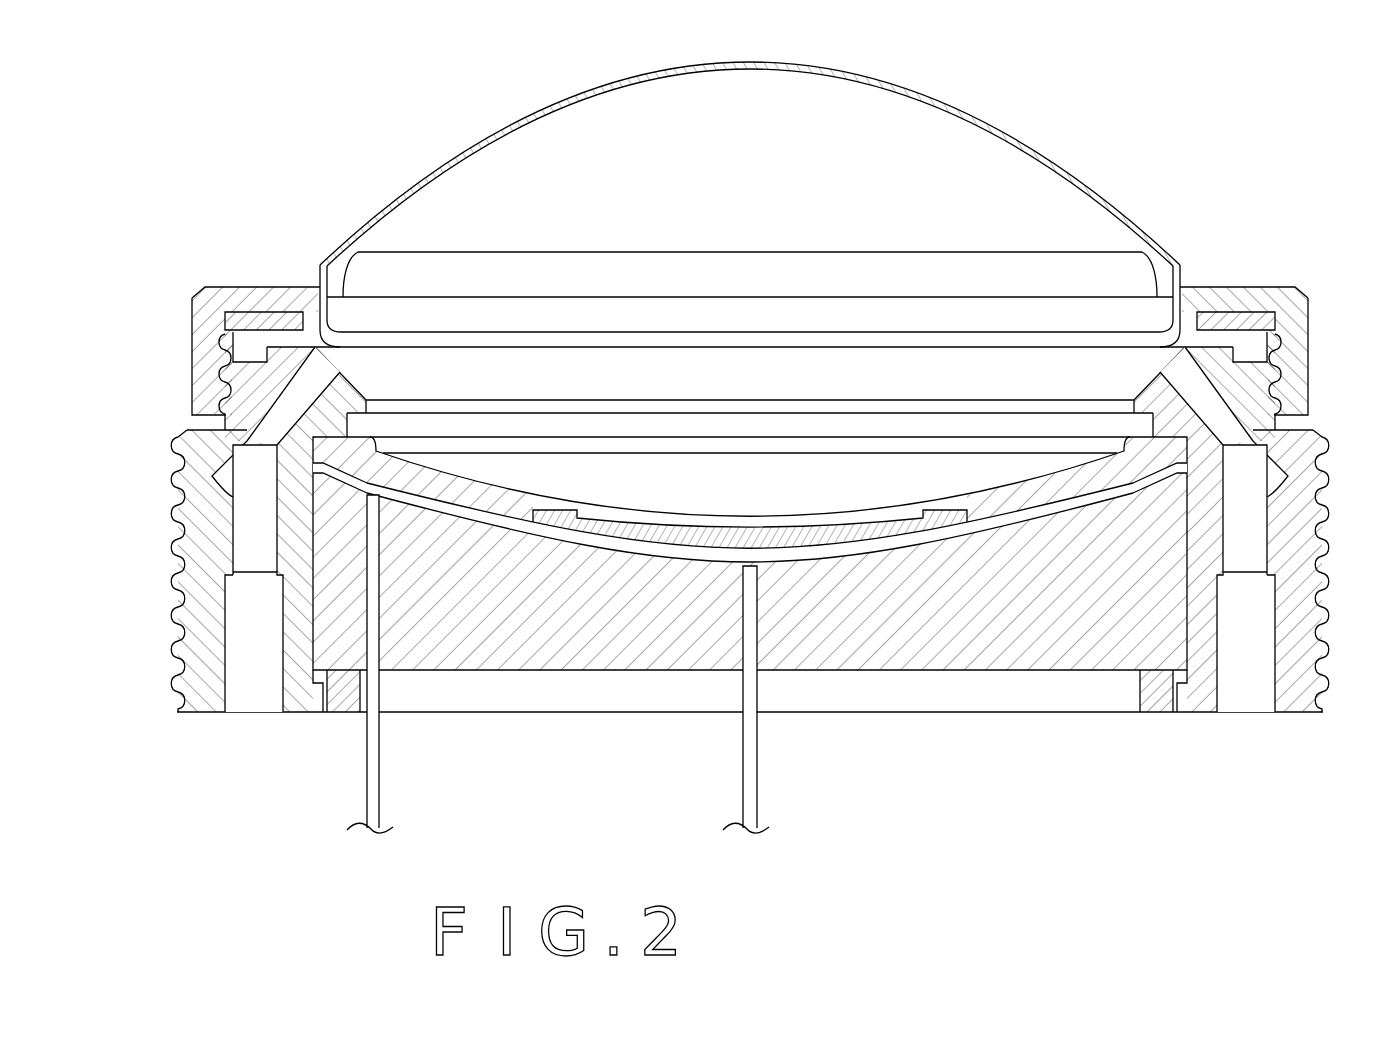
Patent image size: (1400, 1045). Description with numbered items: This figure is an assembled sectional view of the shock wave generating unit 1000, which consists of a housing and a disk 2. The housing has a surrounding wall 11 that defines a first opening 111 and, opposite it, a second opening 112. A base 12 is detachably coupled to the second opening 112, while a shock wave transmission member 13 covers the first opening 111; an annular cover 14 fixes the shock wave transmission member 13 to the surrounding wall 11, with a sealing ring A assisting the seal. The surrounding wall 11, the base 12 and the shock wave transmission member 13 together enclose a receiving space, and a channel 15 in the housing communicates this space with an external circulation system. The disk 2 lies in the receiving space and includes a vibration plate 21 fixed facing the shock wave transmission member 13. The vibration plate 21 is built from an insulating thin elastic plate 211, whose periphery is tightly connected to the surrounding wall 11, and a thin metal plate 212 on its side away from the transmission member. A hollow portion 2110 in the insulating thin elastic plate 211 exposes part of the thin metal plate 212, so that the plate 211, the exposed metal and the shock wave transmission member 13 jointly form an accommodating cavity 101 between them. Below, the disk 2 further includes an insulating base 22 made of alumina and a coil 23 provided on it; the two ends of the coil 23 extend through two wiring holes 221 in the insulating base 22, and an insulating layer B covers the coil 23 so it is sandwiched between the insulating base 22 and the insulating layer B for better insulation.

The shock wave generating unit 1000 is at (716, 468).
The accommodating cavity 101 is at (480, 277).
The shock wave transmission member 13 is at (340, 237).
The annular cover 14 is at (215, 352).
The first opening 111 is at (318, 360).
The surrounding wall 11 is at (203, 584).
The second opening 112 is at (318, 693).
The base 12 is at (342, 698).
The channel 15 is at (257, 527).
The disk 2 is at (750, 670).
The vibration plate 21 is at (750, 633).
The insulating thin elastic plate 211 is at (1070, 487).
The thin metal plate 212 is at (947, 520).
The hollow portion 2110 is at (873, 517).
The insulating base 22 is at (883, 652).
The wiring holes 221 is at (382, 612).
The coil 23 is at (828, 563).
The sealing ring A is at (267, 322).
The insulating layer B is at (1128, 490).